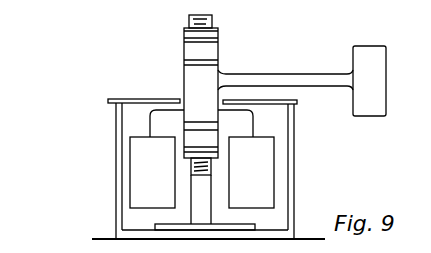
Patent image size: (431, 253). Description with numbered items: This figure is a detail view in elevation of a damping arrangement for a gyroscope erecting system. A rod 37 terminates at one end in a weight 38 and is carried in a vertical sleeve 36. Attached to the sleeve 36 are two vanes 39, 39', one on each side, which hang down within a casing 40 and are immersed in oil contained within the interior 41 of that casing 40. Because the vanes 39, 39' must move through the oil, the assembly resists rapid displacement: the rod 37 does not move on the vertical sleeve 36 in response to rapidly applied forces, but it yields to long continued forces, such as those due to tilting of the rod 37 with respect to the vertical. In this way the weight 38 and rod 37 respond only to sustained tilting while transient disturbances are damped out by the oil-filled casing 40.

The sleeve 36 is at (201, 119).
The rod 37 is at (304, 69).
The weight 38 is at (369, 81).
The vane 39 is at (157, 159).
The vane 39' is at (246, 159).
The casing 40 is at (116, 157).
The interior of the casing 41 is at (202, 165).